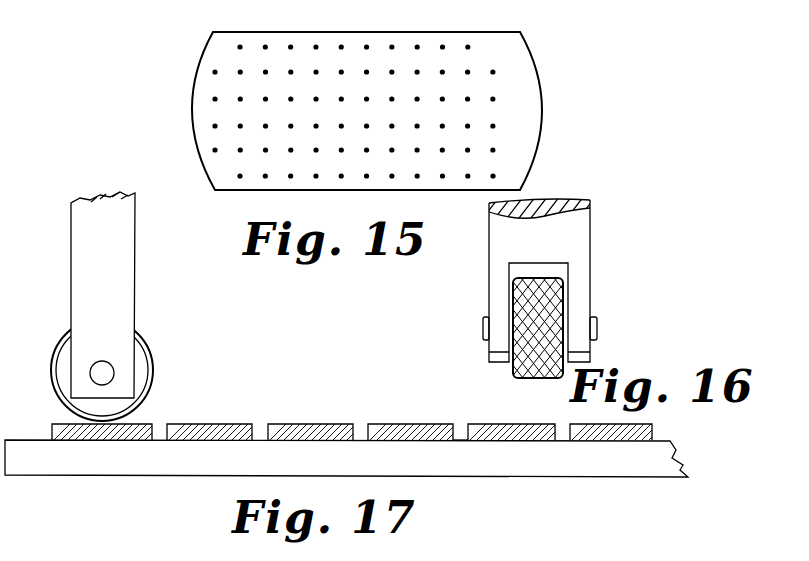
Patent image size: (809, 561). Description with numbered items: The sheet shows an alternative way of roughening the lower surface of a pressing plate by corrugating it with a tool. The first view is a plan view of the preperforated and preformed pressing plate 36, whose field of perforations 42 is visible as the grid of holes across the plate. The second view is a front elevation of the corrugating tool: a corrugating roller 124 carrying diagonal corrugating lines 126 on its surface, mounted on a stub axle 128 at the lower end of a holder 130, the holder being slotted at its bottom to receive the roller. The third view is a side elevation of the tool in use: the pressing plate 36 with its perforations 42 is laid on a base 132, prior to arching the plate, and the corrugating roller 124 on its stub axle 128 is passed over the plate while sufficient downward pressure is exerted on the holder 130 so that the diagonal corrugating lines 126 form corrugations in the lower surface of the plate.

In FIG. 15, the pressing plate 36 is at (527, 87).
In FIG. 17, the pressing plate 36 is at (378, 425).
In FIG. 15, the perforations 42 is at (495, 175).
In FIG. 17, the perforations 42 is at (462, 433).
In FIG. 16, the corrugating roller 124 is at (553, 303).
In FIG. 17, the corrugating roller 124 is at (140, 373).
In FIG. 16, the diagonal corrugating lines 126 is at (553, 318).
In FIG. 16, the stub axle 128 is at (597, 330).
In FIG. 17, the stub axle 128 is at (110, 365).
In FIG. 16, the holder 130 is at (580, 238).
In FIG. 17, the holder 130 is at (128, 252).
In FIG. 17, the base 132 is at (588, 470).